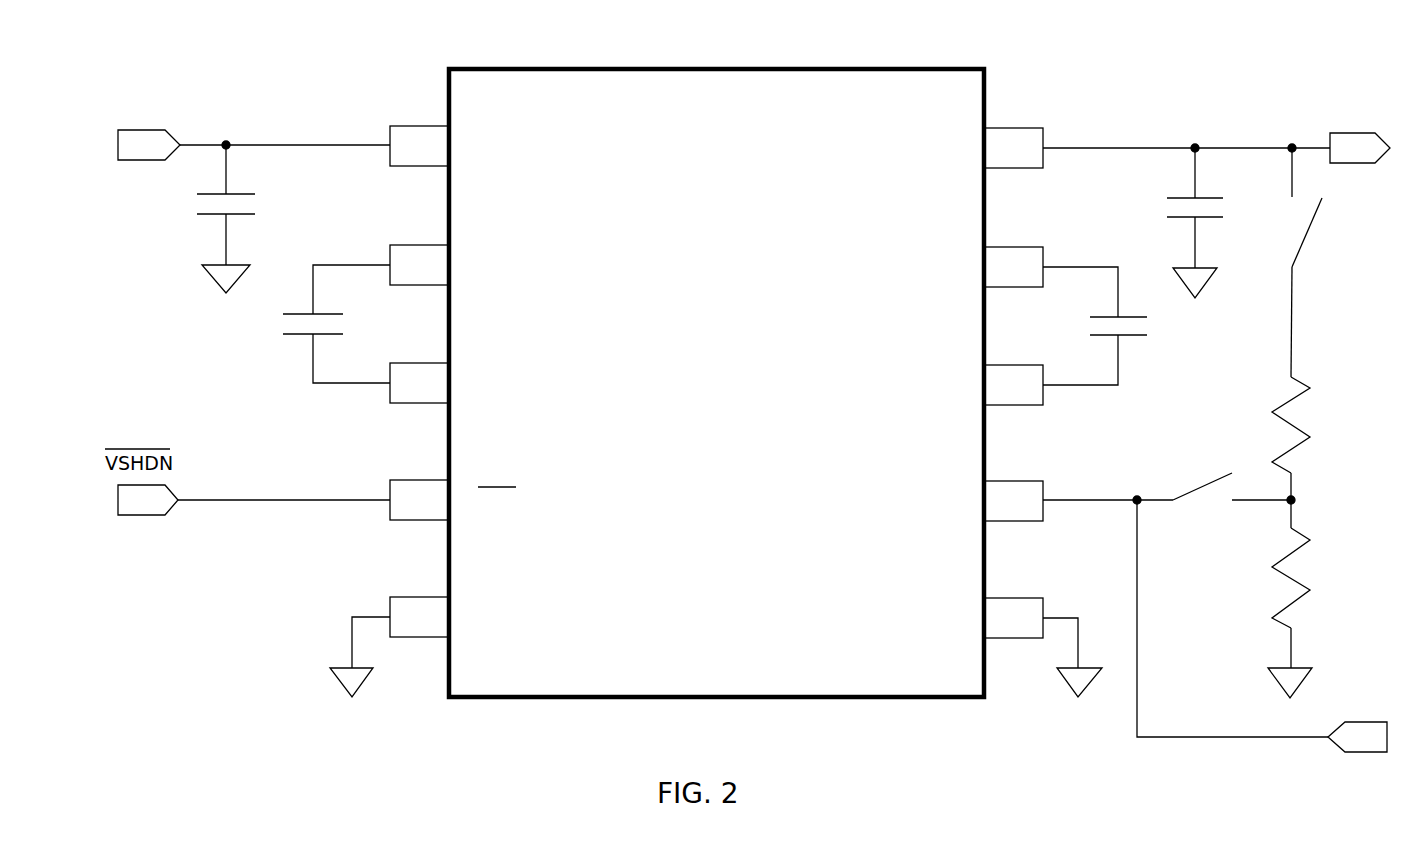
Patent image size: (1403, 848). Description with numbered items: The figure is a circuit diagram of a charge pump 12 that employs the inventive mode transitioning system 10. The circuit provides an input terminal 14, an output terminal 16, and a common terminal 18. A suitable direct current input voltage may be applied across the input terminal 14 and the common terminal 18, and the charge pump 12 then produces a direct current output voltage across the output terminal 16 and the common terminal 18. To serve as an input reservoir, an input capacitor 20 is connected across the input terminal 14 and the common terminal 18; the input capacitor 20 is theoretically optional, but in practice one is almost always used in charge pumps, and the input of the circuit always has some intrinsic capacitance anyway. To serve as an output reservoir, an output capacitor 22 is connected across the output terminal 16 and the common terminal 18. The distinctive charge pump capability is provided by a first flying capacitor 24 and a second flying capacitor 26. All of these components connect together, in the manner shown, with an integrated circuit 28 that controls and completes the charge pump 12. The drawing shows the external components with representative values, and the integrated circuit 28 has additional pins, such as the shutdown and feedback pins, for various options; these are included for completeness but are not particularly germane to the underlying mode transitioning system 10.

The mode transitioning system 10 is at (372, 785).
The charge pump 12 is at (941, 785).
The input terminal 14 is at (295, 145).
The output terminal 16 is at (1137, 148).
The common terminal 18 is at (343, 687).
The input capacitor 20 is at (203, 218).
The output capacitor 22 is at (1178, 220).
The first flying capacitor 24 is at (295, 336).
The second flying capacitor 26 is at (1138, 338).
The integrated circuit 28 is at (701, 397).